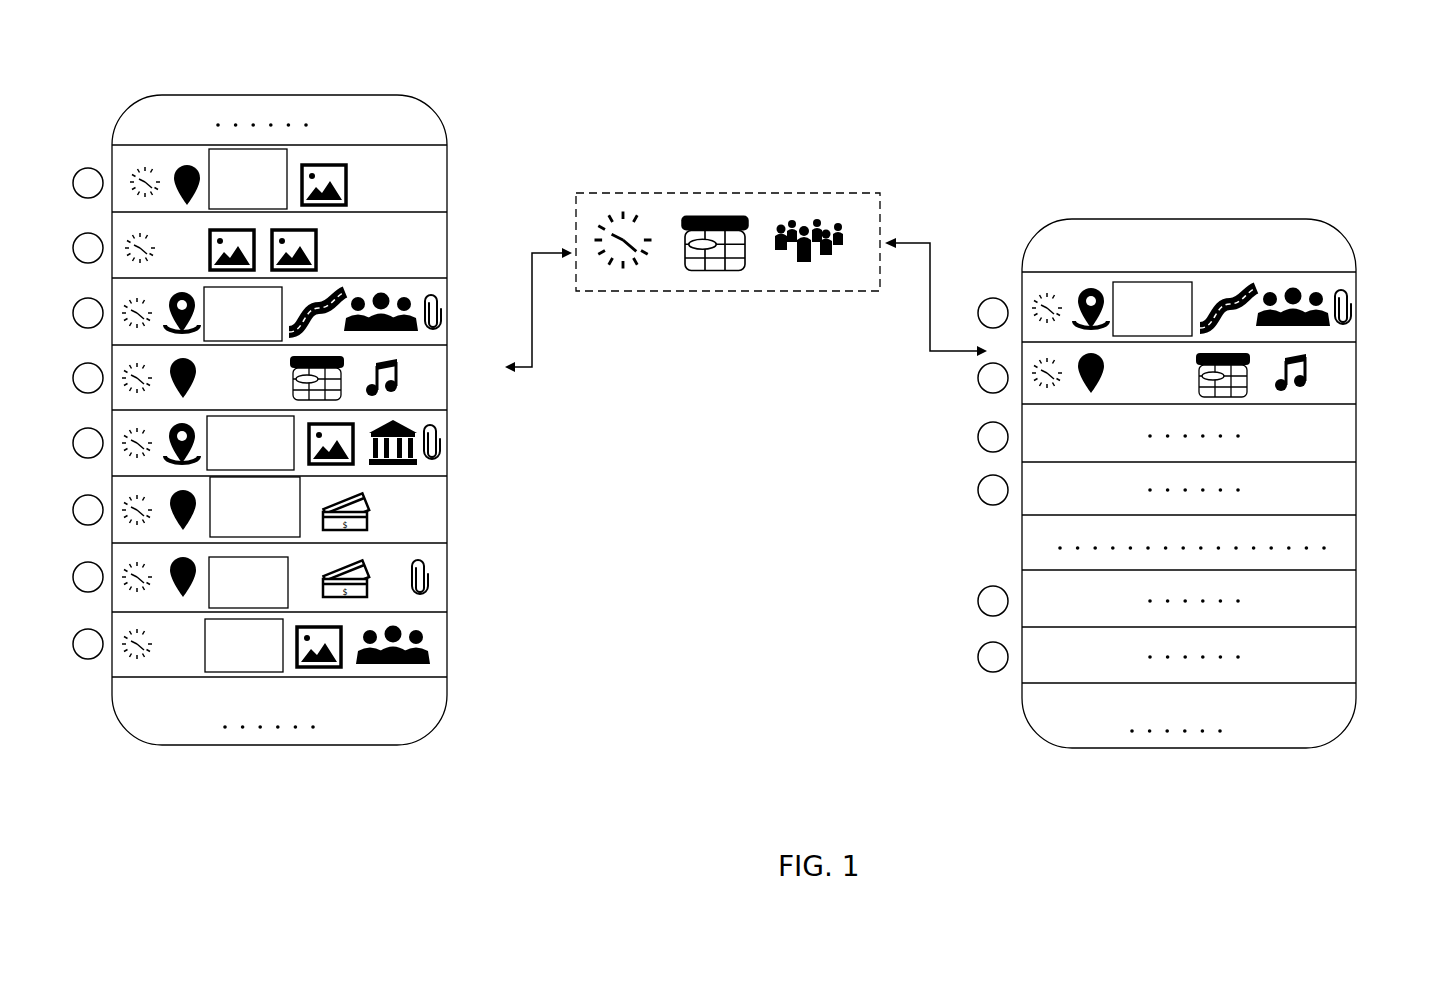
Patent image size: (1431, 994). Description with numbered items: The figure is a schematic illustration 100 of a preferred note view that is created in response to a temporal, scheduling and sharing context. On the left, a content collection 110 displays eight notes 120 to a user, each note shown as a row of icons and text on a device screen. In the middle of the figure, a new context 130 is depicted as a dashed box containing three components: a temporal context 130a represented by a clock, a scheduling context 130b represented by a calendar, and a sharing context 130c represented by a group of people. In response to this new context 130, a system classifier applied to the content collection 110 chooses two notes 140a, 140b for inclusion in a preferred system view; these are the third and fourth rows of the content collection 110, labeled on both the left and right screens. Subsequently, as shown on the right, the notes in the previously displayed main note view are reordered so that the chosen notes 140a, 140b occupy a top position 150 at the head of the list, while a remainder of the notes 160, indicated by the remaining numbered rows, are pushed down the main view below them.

The schematic illustration 100 is at (1215, 88).
The content collection 110 is at (276, 93).
The notes 120 is at (78, 165).
The new context 130 is at (721, 235).
The temporal context 130a is at (608, 277).
The scheduling context 130b is at (710, 275).
The sharing context 130c is at (798, 272).
The first chosen note 140a is at (440, 333).
The second chosen note 140b is at (440, 370).
The top position 150 is at (993, 290).
The remainder of the notes 160 is at (975, 447).